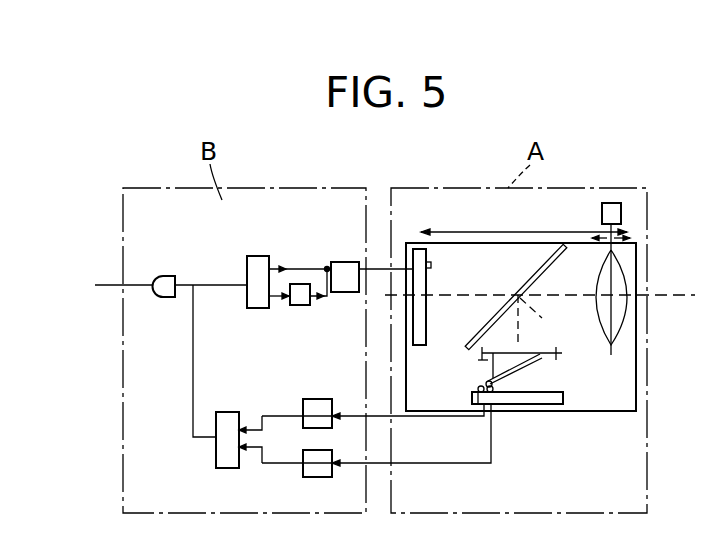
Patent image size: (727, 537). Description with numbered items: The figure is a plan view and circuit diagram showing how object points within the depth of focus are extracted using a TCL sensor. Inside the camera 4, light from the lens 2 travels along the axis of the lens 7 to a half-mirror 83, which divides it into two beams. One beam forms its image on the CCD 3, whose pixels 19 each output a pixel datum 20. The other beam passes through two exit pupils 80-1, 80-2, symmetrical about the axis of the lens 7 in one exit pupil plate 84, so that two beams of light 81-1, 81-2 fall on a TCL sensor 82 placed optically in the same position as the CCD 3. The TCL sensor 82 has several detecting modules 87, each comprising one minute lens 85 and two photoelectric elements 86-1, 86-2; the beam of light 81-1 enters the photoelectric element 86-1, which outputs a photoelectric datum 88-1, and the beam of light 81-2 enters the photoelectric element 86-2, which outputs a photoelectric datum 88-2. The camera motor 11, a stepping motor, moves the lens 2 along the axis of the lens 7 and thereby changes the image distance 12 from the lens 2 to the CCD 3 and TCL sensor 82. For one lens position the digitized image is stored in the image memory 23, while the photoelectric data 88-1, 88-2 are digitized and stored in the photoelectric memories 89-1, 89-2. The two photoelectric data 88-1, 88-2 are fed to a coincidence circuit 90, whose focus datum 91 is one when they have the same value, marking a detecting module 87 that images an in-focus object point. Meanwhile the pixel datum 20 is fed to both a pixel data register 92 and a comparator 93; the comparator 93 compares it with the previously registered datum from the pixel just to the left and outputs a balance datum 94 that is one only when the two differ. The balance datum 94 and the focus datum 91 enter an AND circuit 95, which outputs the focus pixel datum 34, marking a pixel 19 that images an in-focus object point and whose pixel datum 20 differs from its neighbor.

The focus pixel datum 34 is at (106, 284).
The AND circuit 95 is at (163, 296).
The balance datum 94 is at (190, 280).
The focus datum 91 is at (193, 366).
The comparator 93 is at (257, 259).
The pixel datum 20 is at (306, 268).
The pixel data register 92 is at (297, 305).
The image memory 23 is at (343, 268).
The coincidence circuit 90 is at (222, 440).
The photoelectric memory 89-1 is at (317, 405).
The photoelectric memory 89-2 is at (308, 470).
The photoelectric datum 88-1 is at (277, 415).
The photoelectric datum 88-2 is at (262, 465).
The camera 4 is at (458, 252).
The image distance 12 is at (526, 232).
The camera motor 11 is at (612, 213).
The lens 2 is at (613, 285).
The CCD 3 is at (414, 252).
The pixel 19 is at (431, 265).
The axis of the lens 7 is at (540, 318).
The half-mirror 83 is at (537, 273).
The exit pupil plate 84 is at (530, 352).
The exit pupil 80-2 is at (475, 355).
The beam of light 81-2 is at (485, 362).
The exit pupil 80-1 is at (556, 357).
The beam of light 81-1 is at (545, 370).
The detecting module 87 is at (483, 386).
The photoelectric element 86-1 is at (478, 407).
The photoelectric element 86-2 is at (488, 408).
The TCL sensor 82 is at (552, 405).
The minute lens 85 is at (492, 398).